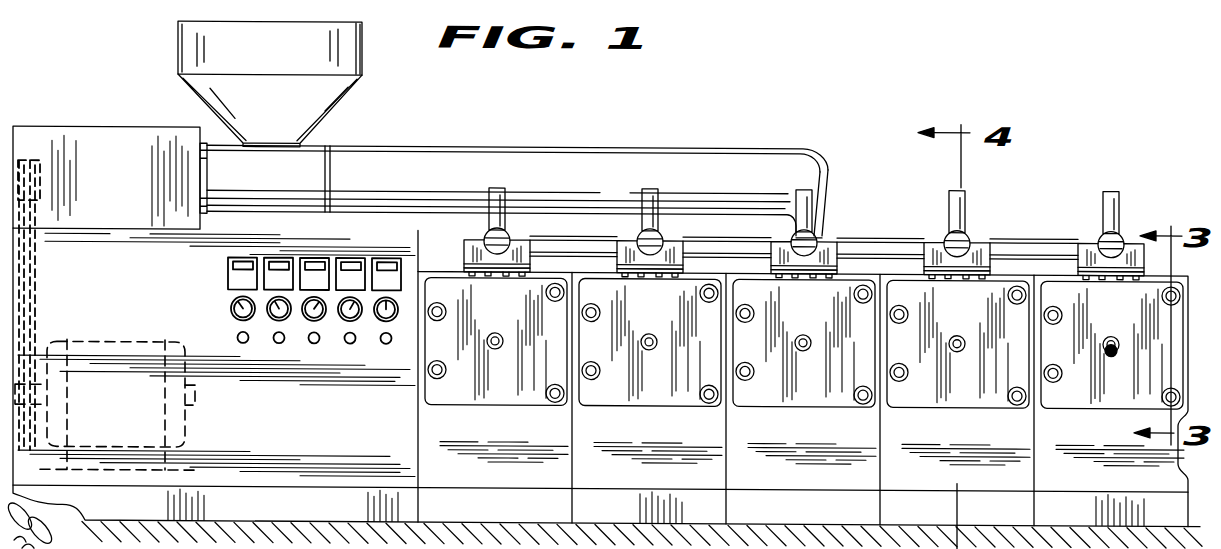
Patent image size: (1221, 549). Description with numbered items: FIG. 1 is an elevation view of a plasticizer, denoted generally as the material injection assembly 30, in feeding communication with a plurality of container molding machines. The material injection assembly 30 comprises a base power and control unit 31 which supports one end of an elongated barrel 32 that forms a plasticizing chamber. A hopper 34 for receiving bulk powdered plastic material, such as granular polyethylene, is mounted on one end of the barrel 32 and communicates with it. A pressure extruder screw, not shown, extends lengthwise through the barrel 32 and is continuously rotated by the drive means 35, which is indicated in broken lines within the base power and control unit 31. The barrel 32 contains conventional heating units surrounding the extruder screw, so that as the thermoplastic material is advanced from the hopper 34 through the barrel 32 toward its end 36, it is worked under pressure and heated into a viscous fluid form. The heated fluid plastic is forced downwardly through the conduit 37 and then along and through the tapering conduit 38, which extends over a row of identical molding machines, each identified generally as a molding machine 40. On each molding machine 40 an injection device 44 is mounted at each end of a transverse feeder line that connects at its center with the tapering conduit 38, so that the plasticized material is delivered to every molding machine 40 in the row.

The material injection assembly 30 is at (652, 136).
The base power and control unit 31 is at (216, 354).
The elongated barrel 32 is at (478, 127).
The hopper 34 is at (352, 70).
The drive means 35 is at (35, 327).
The end of barrel 36 is at (831, 167).
The conduit 37 is at (822, 223).
The tapering conduit 38 is at (713, 241).
The molding machine 40 is at (513, 432).
The injection device 44 is at (490, 213).